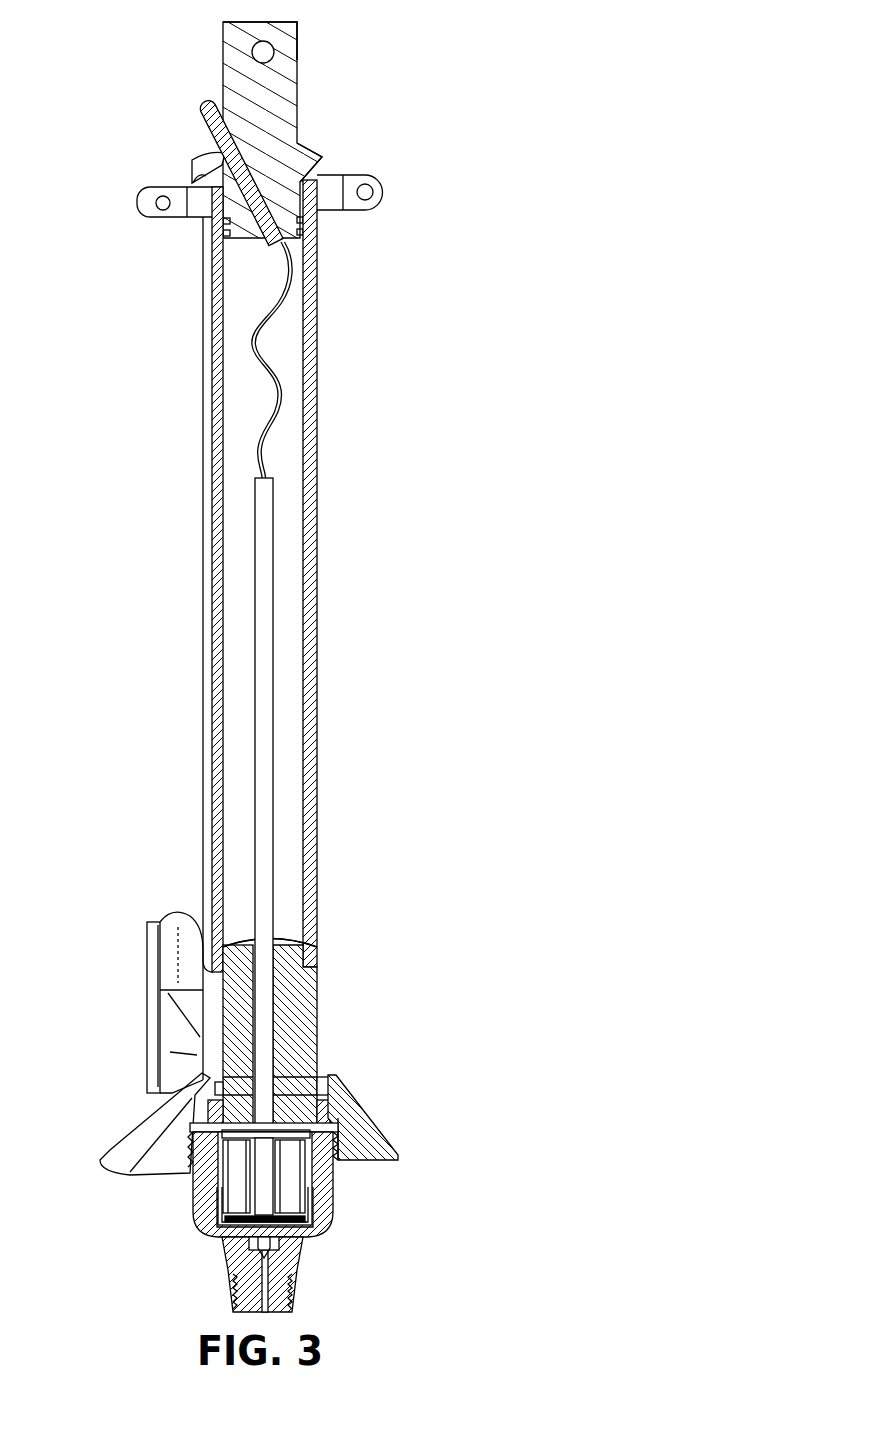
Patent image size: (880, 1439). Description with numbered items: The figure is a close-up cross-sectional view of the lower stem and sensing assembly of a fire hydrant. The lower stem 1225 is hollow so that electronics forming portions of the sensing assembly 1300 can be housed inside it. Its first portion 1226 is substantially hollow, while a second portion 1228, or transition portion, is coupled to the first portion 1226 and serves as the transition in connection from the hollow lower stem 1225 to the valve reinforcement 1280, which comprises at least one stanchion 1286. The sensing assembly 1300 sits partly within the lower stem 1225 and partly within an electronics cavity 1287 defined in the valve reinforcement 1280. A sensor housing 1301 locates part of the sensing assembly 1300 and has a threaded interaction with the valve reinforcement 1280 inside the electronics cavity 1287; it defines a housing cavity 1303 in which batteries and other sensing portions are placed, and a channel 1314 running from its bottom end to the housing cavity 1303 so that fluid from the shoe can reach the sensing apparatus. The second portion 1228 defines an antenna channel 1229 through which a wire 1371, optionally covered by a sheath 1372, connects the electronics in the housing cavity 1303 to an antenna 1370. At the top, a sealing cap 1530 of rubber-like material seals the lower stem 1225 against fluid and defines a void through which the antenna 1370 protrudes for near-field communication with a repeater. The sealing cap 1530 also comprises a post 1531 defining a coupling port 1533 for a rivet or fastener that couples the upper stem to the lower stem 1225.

The lower stem 1225 is at (325, 610).
The first portion 1226 is at (313, 373).
The second portion 1228 is at (349, 961).
The antenna channel 1229 is at (280, 937).
The valve reinforcement 1280 is at (325, 1113).
The stanchion 1286 is at (143, 927).
The electronics cavity 1287 is at (330, 1083).
The sensing assembly 1300 is at (288, 873).
The sensor housing 1301 is at (330, 1207).
The housing cavity 1303 is at (320, 1152).
The channel 1314 is at (290, 1278).
The antenna 1370 is at (305, 240).
The wire 1371 is at (262, 355).
The sheath 1372 is at (273, 497).
The sealing cap 1530 is at (361, 121).
The post 1531 is at (297, 43).
The coupling port 1533 is at (266, 60).